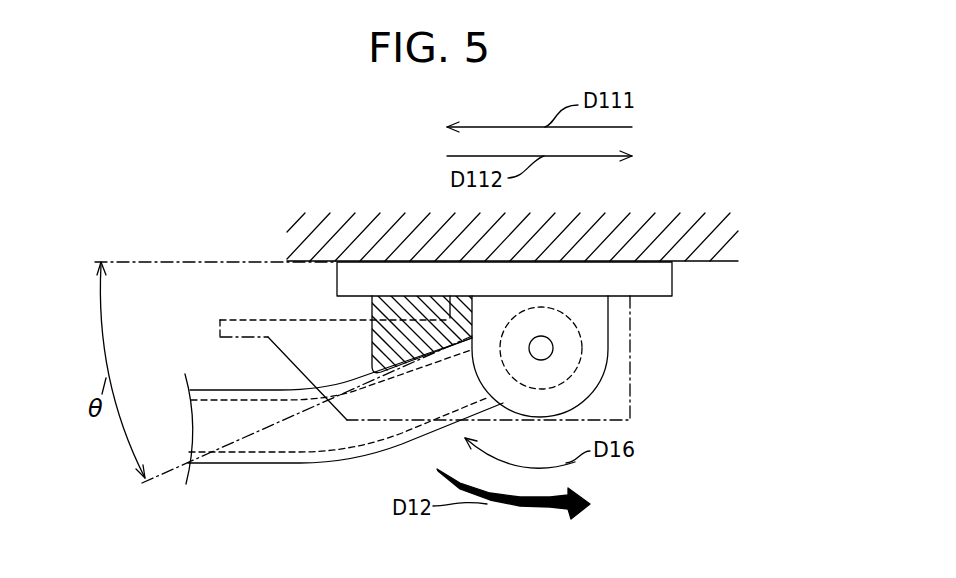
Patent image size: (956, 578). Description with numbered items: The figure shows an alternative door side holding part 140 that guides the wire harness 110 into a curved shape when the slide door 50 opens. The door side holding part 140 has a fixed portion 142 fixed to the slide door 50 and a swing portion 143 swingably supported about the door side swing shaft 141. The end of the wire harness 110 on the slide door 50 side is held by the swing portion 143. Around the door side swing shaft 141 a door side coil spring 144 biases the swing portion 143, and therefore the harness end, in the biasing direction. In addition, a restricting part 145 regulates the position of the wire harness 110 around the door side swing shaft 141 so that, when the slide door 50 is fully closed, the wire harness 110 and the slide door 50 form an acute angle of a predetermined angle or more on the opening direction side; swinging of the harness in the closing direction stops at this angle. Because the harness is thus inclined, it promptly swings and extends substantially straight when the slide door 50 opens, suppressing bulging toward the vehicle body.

The slide door 50 is at (702, 262).
The wire harness 110 is at (232, 465).
The door side holding part 140 is at (651, 342).
The door side swing shaft 141 is at (548, 339).
The fixed portion 142 is at (337, 279).
The swing portion 143 is at (602, 383).
The door side coil spring 144 is at (577, 333).
The restricting part 145 is at (372, 343).